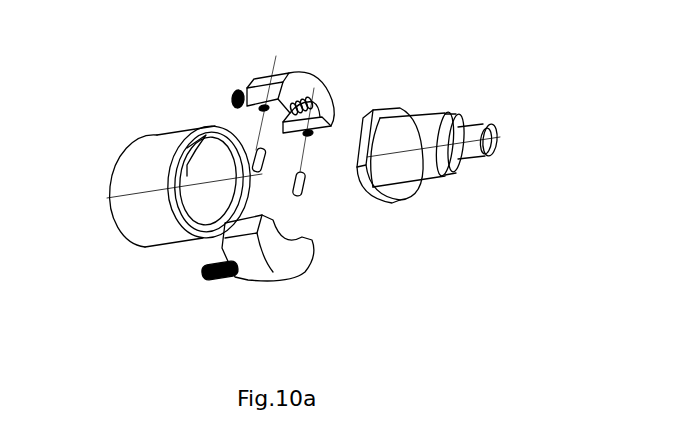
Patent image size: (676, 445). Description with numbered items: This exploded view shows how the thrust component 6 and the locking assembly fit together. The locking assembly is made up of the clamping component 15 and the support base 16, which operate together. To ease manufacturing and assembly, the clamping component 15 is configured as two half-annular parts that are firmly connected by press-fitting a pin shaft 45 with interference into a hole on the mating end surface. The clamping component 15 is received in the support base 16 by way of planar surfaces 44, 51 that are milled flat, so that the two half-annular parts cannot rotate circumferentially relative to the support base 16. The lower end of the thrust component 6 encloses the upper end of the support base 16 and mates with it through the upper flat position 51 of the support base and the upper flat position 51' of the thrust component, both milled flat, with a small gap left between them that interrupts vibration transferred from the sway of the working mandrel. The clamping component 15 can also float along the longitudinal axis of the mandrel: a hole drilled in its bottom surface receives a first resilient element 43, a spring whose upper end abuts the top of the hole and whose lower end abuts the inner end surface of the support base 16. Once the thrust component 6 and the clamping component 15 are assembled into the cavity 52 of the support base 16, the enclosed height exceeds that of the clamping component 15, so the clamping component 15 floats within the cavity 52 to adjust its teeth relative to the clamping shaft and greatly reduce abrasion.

The support base 16 is at (155, 143).
The upper flat position 51 is at (209, 150).
The cavity 52 is at (203, 198).
The clamping component 15 is at (300, 85).
The first resilient element 43 is at (233, 92).
The planar surface 44 is at (253, 93).
The pin shaft 45 is at (303, 183).
The upper flat position 51' is at (393, 121).
The thrust component 6 is at (408, 132).